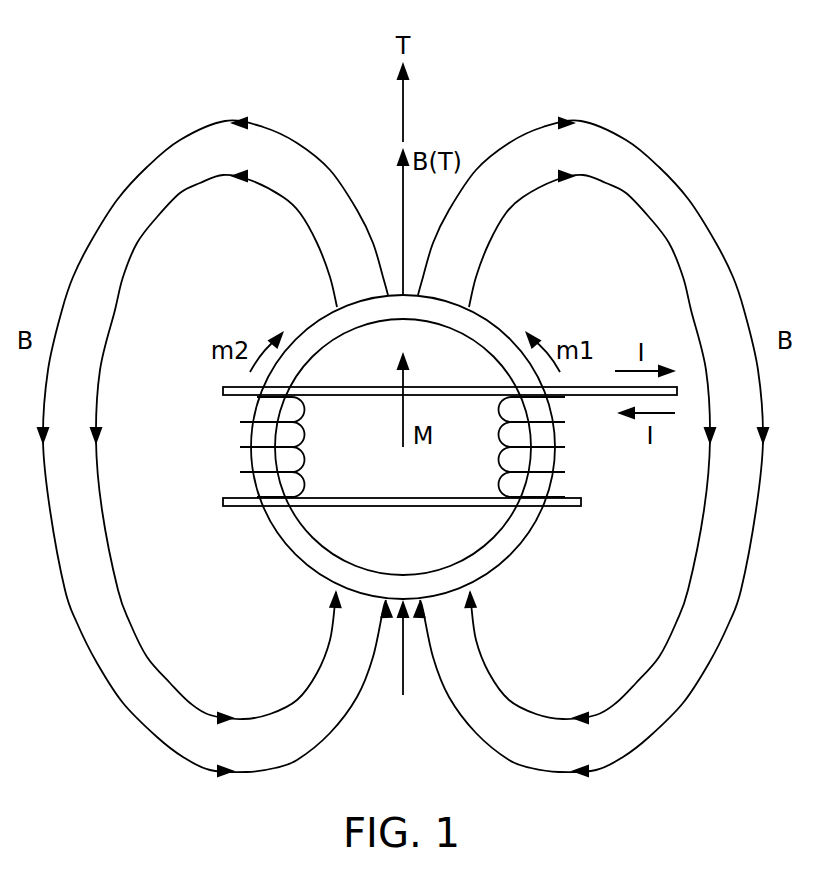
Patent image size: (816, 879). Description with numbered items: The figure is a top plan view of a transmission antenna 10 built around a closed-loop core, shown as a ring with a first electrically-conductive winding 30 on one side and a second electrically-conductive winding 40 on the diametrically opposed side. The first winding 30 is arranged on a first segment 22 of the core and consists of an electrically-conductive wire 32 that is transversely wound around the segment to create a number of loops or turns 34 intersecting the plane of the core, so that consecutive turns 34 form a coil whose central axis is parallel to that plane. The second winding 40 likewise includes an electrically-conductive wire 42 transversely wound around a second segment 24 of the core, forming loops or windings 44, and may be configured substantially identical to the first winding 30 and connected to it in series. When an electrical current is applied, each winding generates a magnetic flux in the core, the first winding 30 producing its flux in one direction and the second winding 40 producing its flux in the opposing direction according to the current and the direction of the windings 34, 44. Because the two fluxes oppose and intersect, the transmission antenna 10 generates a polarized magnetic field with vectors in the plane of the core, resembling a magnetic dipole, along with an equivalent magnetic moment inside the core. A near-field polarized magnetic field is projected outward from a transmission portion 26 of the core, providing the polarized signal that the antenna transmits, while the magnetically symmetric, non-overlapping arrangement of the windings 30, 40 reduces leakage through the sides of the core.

The transmission antenna 10 is at (79, 185).
The first segment 22 is at (560, 476).
The second segment 24 is at (247, 476).
The transmission portion 26 is at (403, 296).
The first electrically-conductive winding 30 is at (560, 491).
The electrically-conductive wire 32 is at (667, 397).
The turns 34 is at (541, 433).
The second electrically-conductive winding 40 is at (247, 495).
The electrically-conductive wire 42 is at (238, 498).
The loops or windings 44 is at (252, 408).